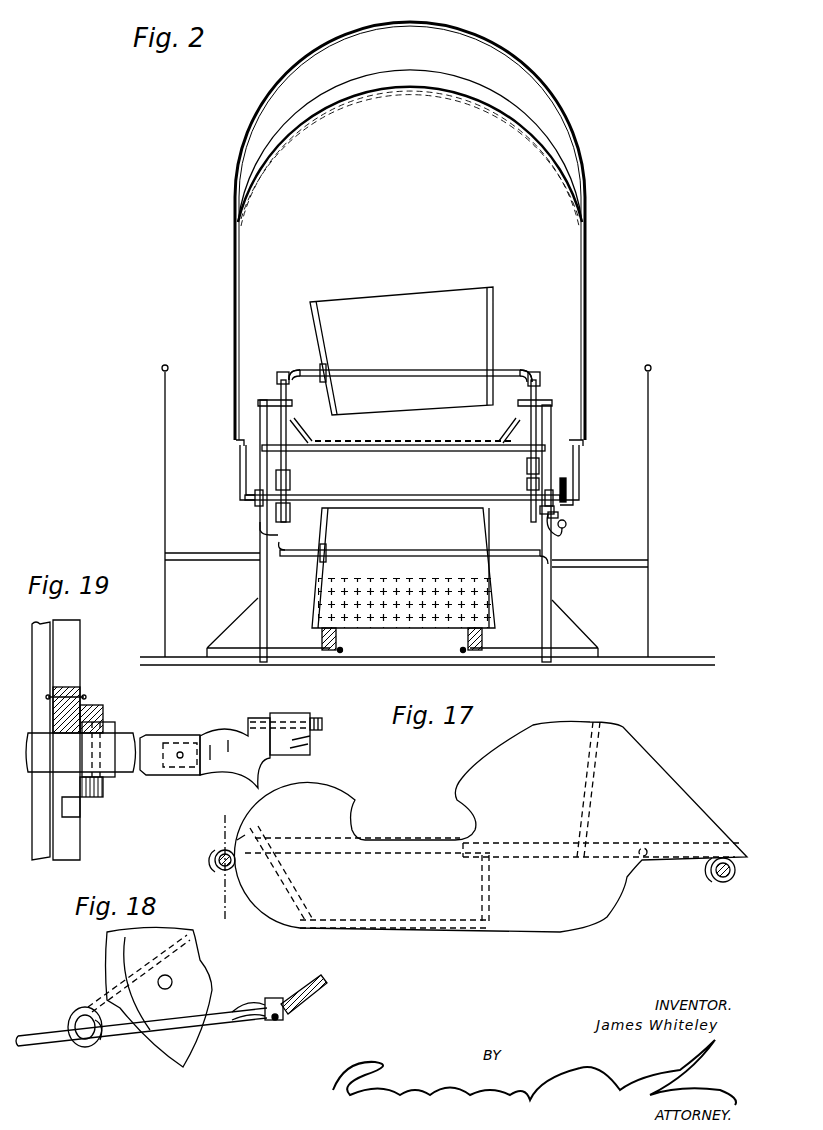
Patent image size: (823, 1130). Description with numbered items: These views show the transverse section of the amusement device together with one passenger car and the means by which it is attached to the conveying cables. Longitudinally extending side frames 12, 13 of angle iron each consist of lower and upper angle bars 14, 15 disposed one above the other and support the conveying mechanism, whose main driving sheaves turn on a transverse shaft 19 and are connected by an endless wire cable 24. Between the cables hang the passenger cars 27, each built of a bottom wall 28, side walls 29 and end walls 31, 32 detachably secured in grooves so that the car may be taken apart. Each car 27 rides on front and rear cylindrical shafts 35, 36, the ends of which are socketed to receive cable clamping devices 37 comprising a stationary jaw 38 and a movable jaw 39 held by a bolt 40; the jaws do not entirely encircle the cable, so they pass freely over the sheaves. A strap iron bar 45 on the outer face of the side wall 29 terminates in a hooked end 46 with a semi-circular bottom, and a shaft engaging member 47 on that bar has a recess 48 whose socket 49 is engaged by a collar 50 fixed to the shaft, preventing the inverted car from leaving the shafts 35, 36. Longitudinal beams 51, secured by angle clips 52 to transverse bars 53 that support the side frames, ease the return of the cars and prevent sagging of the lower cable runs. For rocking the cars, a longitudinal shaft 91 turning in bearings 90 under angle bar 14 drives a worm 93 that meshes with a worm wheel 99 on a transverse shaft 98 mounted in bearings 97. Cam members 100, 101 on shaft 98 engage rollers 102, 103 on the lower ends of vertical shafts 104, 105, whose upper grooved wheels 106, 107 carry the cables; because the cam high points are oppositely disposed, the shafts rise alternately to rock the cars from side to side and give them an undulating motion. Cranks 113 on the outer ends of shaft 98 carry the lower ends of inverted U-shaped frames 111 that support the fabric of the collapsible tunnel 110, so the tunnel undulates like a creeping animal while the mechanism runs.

In FIG. 2, the collapsible tunnel 110 is at (592, 149).
In FIG. 2, the inverted U-shaped frames 111 is at (328, 96).
In FIG. 2, the side frame 12 is at (242, 531).
In FIG. 2, the side frame 13 is at (568, 593).
In FIG. 2, the angle bar 14 is at (281, 528).
In FIG. 2, the angle bar 15 is at (540, 512).
In FIG. 19, the angle bar 15 is at (55, 810).
In FIG. 2, the passenger car 27 is at (494, 317).
In FIG. 19, the passenger car 27 is at (90, 638).
In FIG. 17, the passenger car 27 is at (471, 940).
In FIG. 17, the bottom wall 28 is at (380, 926).
In FIG. 19, the side wall 29 is at (80, 655).
In FIG. 17, the side wall 29 is at (533, 930).
In FIG. 18, the side wall 29 is at (115, 945).
In FIG. 19, the end wall 31 is at (40, 628).
In FIG. 17, the end wall 31 is at (272, 900).
In FIG. 17, the end wall 32 is at (588, 797).
In FIG. 2, the cylindrical shaft 35 is at (375, 552).
In FIG. 19, the cylindrical shaft 35 is at (172, 735).
In FIG. 17, the cylindrical shaft 35 is at (215, 858).
In FIG. 18, the cylindrical shaft 35 is at (40, 1034).
In FIG. 2, the cylindrical shaft 36 is at (370, 370).
In FIG. 17, the cylindrical shaft 36 is at (745, 871).
In FIG. 2, the cable clamping device 37 is at (286, 370).
In FIG. 19, the cable clamping device 37 is at (272, 701).
In FIG. 18, the cable clamping device 37 is at (269, 1030).
In FIG. 19, the stationary jaw 38 is at (255, 716).
In FIG. 18, the stationary jaw 38 is at (273, 1003).
In FIG. 19, the movable jaw 39 is at (298, 715).
In FIG. 18, the movable jaw 39 is at (283, 1003).
In FIG. 19, the bolt 40 is at (328, 720).
In FIG. 18, the bolt 40 is at (292, 1012).
In FIG. 18, the endless wire cable 24 is at (326, 985).
In FIG. 17, the strap iron bar 45 is at (230, 845).
In FIG. 18, the strap iron bar 45 is at (100, 992).
In FIG. 17, the hooked end 46 is at (215, 870).
In FIG. 18, the hooked end 46 is at (95, 1050).
In FIG. 19, the shaft engaging member 47 is at (82, 700).
In FIG. 18, the shaft engaging member 47 is at (88, 1050).
In FIG. 19, the recess 48 is at (76, 805).
In FIG. 19, the socket 49 is at (103, 795).
In FIG. 19, the collar 50 is at (110, 724).
In FIG. 18, the collar 50 is at (85, 1007).
In FIG. 2, the beam 51 is at (337, 636).
In FIG. 2, the angle clip 52 is at (340, 656).
In FIG. 2, the transverse bar 53 is at (508, 660).
In FIG. 2, the bearing 90 is at (562, 535).
In FIG. 2, the longitudinal shaft 91 is at (567, 524).
In FIG. 2, the worm 93 is at (560, 514).
In FIG. 2, the bearing 97 is at (262, 490).
In FIG. 2, the shaft 98 is at (480, 497).
In FIG. 2, the worm wheel 99 is at (567, 488).
In FIG. 2, the cam member 100 is at (527, 484).
In FIG. 2, the cam member 101 is at (291, 517).
In FIG. 2, the roller 102 is at (527, 467).
In FIG. 2, the roller 103 is at (291, 480).
In FIG. 2, the vertical shaft 104 is at (530, 412).
In FIG. 2, the vertical shaft 105 is at (287, 416).
In FIG. 2, the grooved wheel 106 is at (538, 372).
In FIG. 2, the grooved wheel 107 is at (278, 380).
In FIG. 2, the crank 113 is at (240, 467).
In FIG. 17, the shaft 19 is at (219, 816).